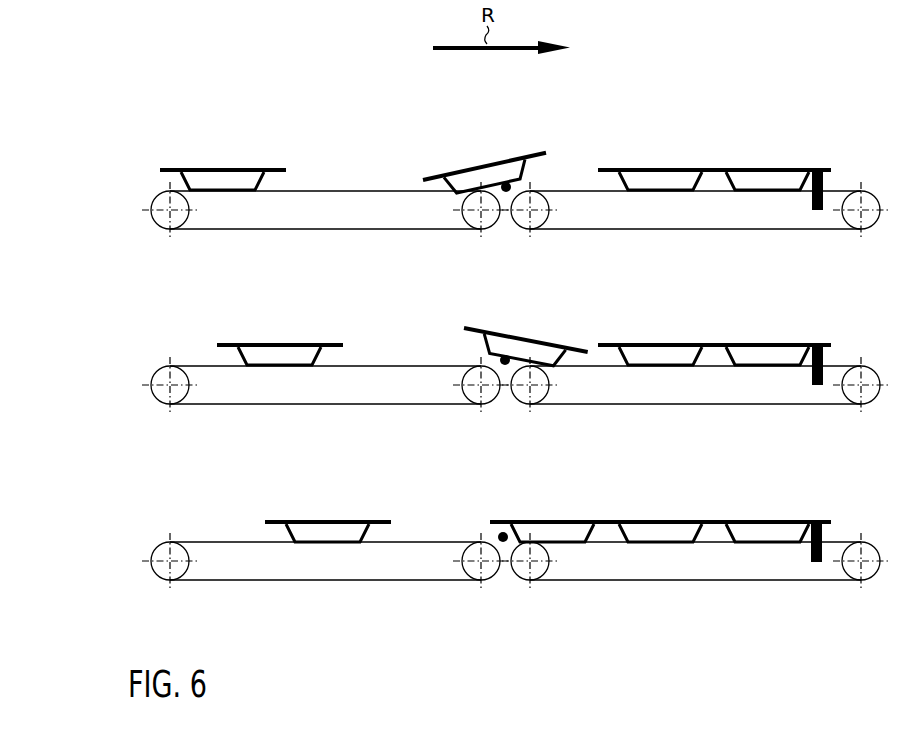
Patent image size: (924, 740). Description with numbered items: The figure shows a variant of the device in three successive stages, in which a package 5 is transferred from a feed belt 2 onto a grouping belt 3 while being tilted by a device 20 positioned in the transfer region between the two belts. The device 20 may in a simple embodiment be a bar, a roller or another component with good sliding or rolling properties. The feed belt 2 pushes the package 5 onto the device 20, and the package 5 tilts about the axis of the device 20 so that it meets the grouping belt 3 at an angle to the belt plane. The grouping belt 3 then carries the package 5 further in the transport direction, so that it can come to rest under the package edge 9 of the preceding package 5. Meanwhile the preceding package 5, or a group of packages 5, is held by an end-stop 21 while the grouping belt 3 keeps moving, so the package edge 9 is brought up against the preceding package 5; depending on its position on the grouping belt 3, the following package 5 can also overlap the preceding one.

The feed belt 2 is at (315, 214).
The grouping belt 3 is at (727, 214).
The package 5 is at (211, 168).
The package edge 9 is at (605, 350).
The device for tilting 20 is at (517, 212).
The end-stop 21 is at (826, 180).